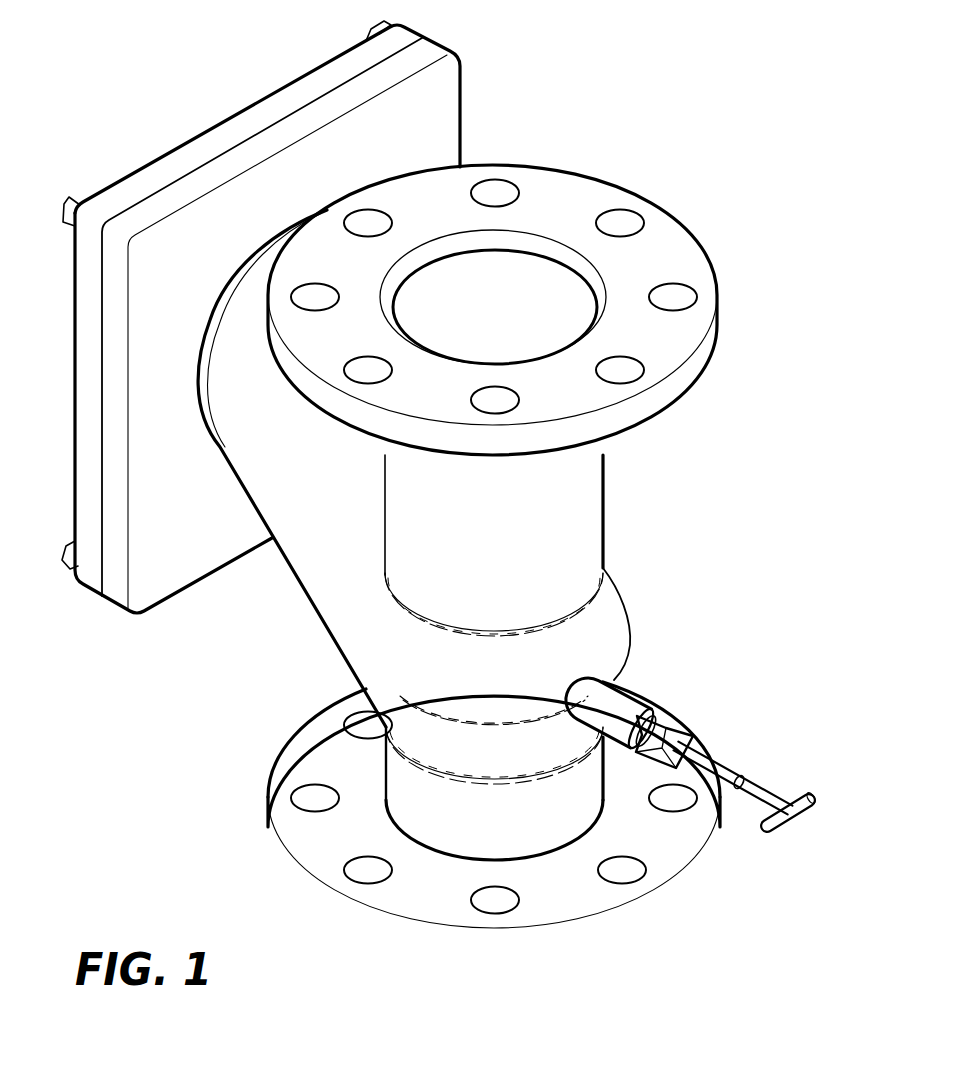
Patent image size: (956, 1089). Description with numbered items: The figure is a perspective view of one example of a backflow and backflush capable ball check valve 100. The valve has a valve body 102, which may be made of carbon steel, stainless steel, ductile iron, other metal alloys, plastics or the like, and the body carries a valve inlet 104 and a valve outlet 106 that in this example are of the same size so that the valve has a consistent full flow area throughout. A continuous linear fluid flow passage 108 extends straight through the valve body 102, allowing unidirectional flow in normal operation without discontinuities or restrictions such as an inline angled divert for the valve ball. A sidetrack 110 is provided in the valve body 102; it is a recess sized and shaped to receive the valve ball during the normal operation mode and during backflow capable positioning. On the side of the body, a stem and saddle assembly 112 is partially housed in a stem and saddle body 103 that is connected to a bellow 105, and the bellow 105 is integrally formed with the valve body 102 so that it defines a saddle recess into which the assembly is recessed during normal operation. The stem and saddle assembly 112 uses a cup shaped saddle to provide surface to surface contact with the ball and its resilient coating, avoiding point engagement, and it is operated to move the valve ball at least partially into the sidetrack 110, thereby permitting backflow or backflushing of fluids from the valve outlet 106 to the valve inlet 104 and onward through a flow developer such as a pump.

The backflow capable ball check valve 100 is at (582, 92).
The valve body 102 is at (583, 500).
The stem and saddle body 103 is at (627, 700).
The valve inlet 104 is at (527, 847).
The bellow 105 is at (625, 610).
The valve outlet 106 is at (560, 253).
The continuous linear fluid flow passage 108 is at (572, 307).
The sidetrack 110 is at (317, 573).
The stem and saddle assembly 112 is at (757, 790).